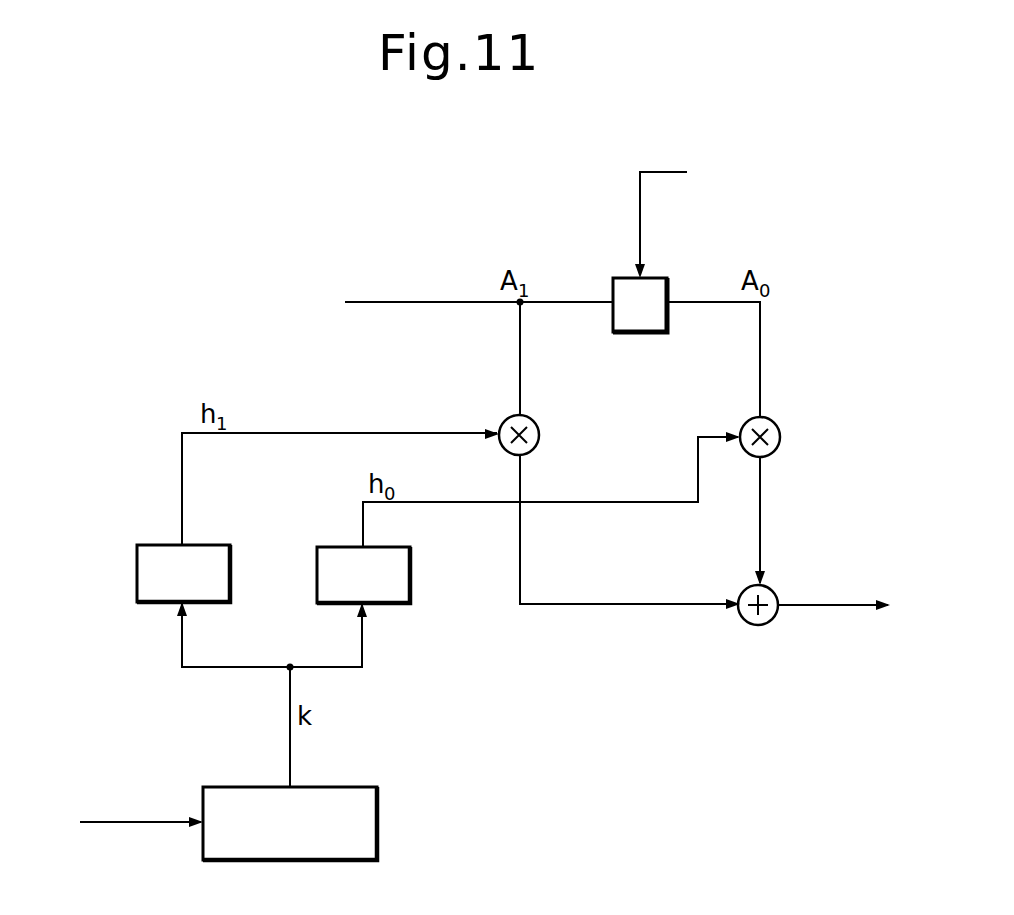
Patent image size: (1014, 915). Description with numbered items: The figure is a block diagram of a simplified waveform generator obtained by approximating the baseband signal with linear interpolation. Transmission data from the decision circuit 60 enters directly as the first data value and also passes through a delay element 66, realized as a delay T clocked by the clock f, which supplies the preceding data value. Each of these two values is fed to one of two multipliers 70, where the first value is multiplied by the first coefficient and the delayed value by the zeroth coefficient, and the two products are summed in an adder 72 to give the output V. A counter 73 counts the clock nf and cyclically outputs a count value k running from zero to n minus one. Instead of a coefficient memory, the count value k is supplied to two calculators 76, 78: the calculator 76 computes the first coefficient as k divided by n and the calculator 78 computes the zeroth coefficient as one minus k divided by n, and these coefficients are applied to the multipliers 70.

The decision circuit 60 is at (395, 299).
The delay element 66 is at (659, 334).
The multiplier 70 is at (536, 421).
The adder 72 is at (771, 588).
The counter 73 is at (378, 806).
The calculator 76 is at (231, 548).
The calculator 78 is at (411, 550).